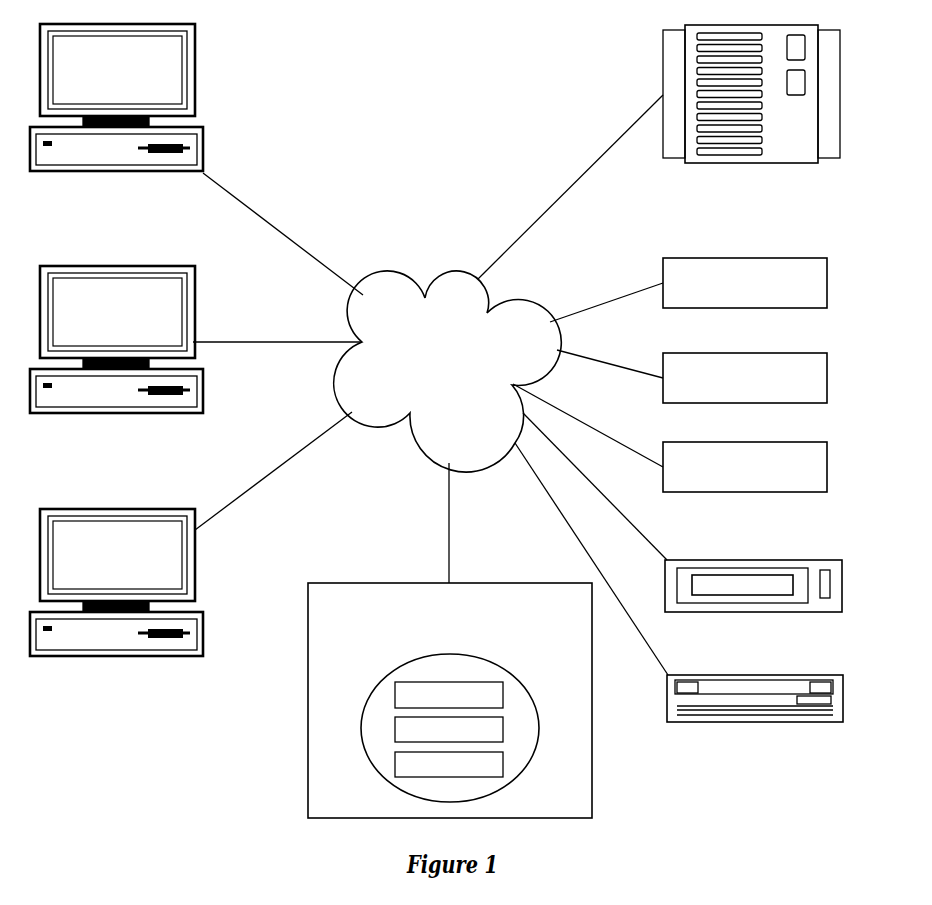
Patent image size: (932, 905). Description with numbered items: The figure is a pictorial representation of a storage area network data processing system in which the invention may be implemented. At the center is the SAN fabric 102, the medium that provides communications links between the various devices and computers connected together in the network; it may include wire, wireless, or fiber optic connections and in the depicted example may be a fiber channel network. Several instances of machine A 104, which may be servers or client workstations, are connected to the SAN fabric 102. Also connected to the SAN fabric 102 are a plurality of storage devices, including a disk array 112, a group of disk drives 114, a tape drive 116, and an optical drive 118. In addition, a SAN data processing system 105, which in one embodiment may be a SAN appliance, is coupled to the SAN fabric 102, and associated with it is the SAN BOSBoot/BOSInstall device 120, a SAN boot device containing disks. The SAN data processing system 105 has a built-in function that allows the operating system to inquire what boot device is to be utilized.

The SAN fabric 102 is at (466, 391).
The machine A 104 is at (130, 221).
The SAN data processing system 105 is at (383, 582).
The disk array 112 is at (768, 226).
The disk drives 114 is at (850, 253).
The tape drive 116 is at (768, 658).
The optical drive 118 is at (768, 795).
The SAN BOSBoot/BOSInstall device 120 is at (530, 762).